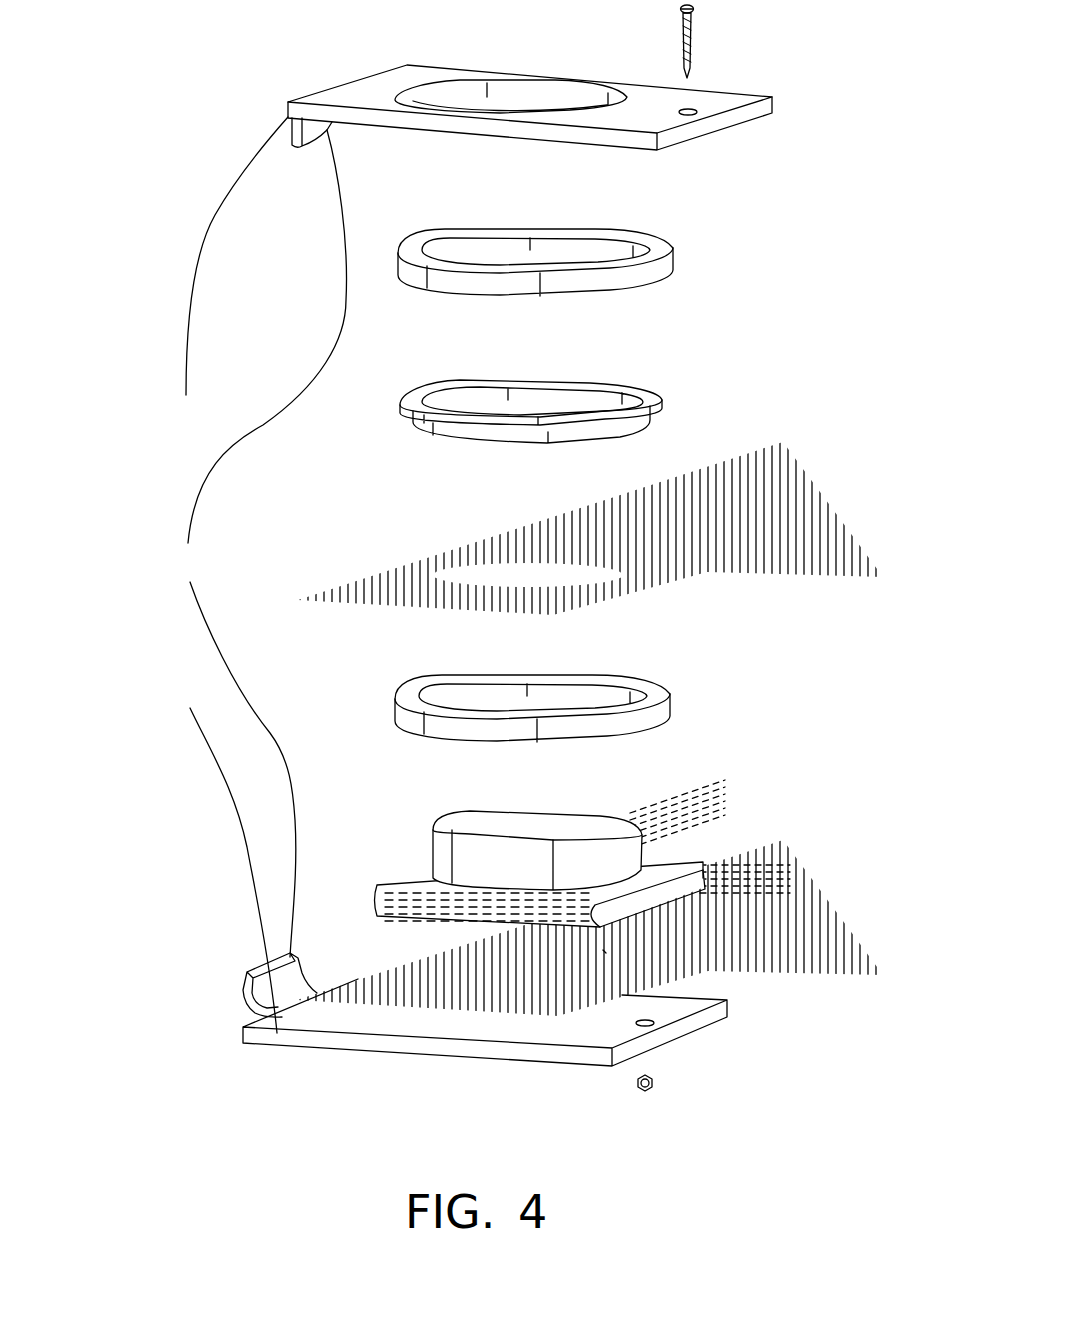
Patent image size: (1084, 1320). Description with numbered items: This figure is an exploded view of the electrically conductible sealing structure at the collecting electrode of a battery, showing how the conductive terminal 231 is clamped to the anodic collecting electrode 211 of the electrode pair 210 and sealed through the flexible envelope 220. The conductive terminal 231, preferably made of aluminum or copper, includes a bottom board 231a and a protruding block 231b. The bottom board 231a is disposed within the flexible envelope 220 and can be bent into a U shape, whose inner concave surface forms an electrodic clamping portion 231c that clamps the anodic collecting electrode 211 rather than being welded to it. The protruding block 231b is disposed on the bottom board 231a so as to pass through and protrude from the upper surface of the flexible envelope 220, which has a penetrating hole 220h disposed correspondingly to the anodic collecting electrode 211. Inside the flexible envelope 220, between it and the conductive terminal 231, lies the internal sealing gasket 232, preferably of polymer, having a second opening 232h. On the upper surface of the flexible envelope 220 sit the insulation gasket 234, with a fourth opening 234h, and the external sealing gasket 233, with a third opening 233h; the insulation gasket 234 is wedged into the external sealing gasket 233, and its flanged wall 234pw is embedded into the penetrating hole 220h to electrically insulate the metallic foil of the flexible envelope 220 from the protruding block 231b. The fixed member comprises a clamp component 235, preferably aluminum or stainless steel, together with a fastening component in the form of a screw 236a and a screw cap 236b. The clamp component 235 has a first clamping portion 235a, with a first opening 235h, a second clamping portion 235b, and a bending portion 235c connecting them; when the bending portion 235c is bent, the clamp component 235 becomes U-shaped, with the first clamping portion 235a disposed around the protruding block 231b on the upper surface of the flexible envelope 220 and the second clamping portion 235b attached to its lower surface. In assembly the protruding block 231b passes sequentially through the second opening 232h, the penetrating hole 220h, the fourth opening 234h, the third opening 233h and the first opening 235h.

The electrode pair 210 is at (751, 848).
The anodic collecting electrode 211 is at (603, 950).
The flexible envelope 220 is at (800, 578).
The penetrating hole 220h is at (512, 570).
The conductive terminal 231 is at (420, 757).
The bottom board 231a is at (370, 893).
The protruding block 231b is at (437, 852).
The electrodic clamping portion 231c is at (690, 925).
The internal sealing gasket 232 is at (650, 693).
The second opening 232h is at (567, 666).
The external sealing gasket 233 is at (668, 262).
The third opening 233h is at (547, 248).
The insulation gasket 234 is at (662, 406).
The fourth opening 234h is at (525, 398).
The flanged wall 234pw is at (612, 440).
The clamp component 235 is at (153, 415).
The first clamping portion 235a is at (467, 230).
The second clamping portion 235b is at (444, 871).
The bending portion 235c is at (254, 575).
The first opening 235h is at (562, 95).
The screw 236a is at (695, 27).
The screw cap 236b is at (632, 1097).